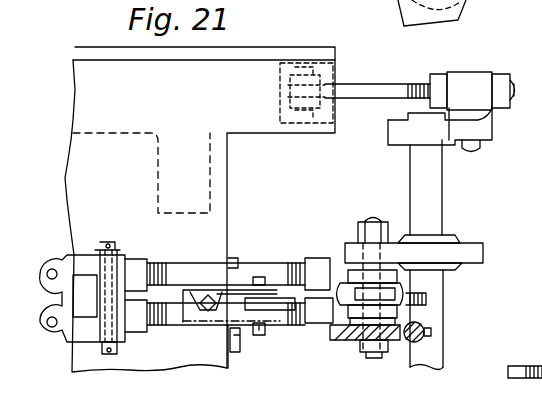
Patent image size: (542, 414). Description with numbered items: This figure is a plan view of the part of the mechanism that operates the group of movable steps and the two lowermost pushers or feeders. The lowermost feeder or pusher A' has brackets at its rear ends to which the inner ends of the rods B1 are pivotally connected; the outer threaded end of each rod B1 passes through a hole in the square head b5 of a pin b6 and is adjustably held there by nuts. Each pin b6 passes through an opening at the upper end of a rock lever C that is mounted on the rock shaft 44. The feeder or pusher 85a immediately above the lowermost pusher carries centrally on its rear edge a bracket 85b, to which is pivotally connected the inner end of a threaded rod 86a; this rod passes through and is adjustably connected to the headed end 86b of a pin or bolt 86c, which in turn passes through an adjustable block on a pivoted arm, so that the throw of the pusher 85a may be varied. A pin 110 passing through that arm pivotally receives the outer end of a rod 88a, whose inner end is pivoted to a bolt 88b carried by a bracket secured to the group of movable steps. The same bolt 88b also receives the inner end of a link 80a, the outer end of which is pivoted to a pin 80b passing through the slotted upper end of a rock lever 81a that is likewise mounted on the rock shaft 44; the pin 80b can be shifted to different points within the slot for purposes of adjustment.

The lowermost feeder or pusher A' is at (180, 207).
The rod B1 is at (363, 93).
The square head b5 is at (477, 80).
The rock lever C is at (492, 125).
The pin b6 is at (480, 148).
The rock shaft 44 is at (430, 207).
The rock lever 81a is at (481, 253).
The pin 80b is at (371, 220).
The link 80a is at (290, 268).
The headed end 86b is at (346, 284).
The rod 88a is at (283, 328).
The pin 110 is at (377, 358).
The bolt 88b is at (110, 355).
The bracket 85b is at (190, 305).
The threaded rod 86a is at (262, 298).
The feeder or pusher 85a is at (222, 207).
The pin or bolt 86c is at (521, 368).